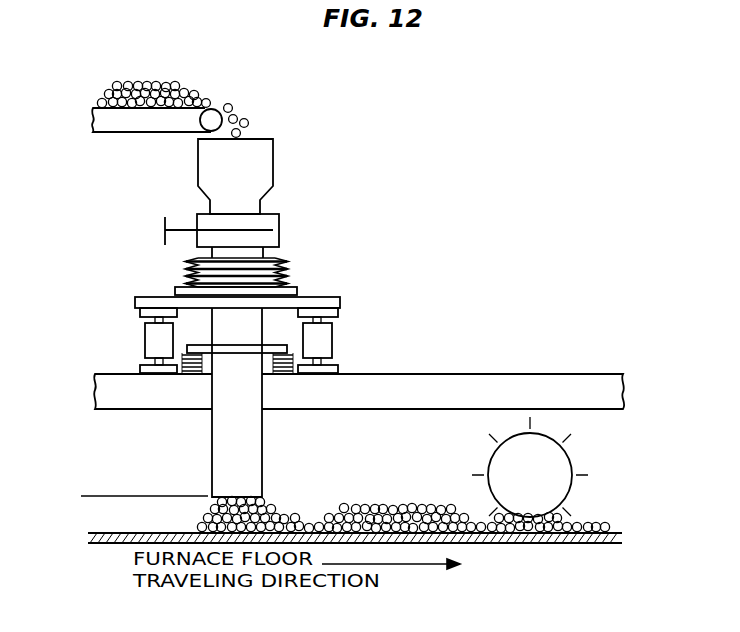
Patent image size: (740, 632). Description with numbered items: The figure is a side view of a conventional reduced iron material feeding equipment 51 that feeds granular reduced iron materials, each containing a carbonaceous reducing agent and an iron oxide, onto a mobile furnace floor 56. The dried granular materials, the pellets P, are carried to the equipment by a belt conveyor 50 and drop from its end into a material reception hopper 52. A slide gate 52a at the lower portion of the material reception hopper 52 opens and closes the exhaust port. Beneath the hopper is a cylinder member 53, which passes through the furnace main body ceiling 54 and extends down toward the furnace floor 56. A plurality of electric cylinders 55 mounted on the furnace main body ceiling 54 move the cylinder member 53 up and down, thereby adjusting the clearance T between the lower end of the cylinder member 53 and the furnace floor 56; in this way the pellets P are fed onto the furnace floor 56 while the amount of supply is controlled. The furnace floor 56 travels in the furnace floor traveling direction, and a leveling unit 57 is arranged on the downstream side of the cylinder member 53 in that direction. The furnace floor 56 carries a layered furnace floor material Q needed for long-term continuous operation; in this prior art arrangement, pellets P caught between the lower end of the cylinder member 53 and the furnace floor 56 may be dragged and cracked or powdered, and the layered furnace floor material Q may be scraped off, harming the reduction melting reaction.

The pellets P is at (170, 84).
The belt conveyor 50 is at (135, 133).
The reduced iron material feeding equipment 51 is at (365, 269).
The material reception hopper 52 is at (277, 160).
The slide gate 52a is at (172, 228).
The cylinder member 53 is at (265, 422).
The furnace main body ceiling 54 is at (417, 384).
The electric cylinders 55 is at (158, 343).
The furnace floor 56 is at (133, 545).
The leveling unit 57 is at (598, 494).
The layered furnace floor material Q is at (148, 532).
The clearance T is at (81, 475).